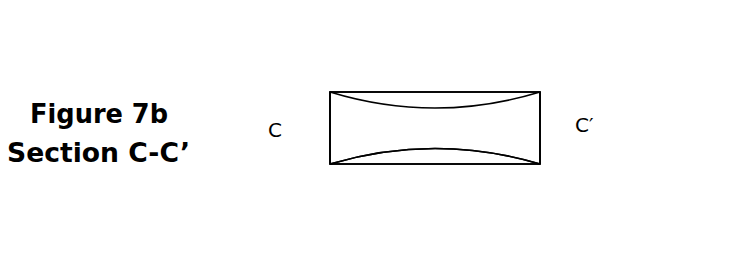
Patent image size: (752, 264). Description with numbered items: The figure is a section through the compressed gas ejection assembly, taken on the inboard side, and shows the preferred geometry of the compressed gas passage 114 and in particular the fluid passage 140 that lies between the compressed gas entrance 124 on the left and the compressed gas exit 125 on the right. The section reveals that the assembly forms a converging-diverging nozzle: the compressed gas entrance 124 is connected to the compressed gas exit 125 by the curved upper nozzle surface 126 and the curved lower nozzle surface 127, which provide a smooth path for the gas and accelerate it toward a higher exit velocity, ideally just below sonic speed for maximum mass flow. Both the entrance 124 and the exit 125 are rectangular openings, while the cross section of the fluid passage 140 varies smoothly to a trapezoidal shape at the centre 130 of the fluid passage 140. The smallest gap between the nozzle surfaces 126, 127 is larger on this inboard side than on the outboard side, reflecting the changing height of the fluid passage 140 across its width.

The compressed gas passage 114 is at (473, 125).
The fluid passage 140 is at (435, 128).
The upper nozzle surface 126 is at (383, 100).
The lower nozzle surface 127 is at (492, 150).
The centre of the fluid passage 130 is at (433, 130).
The compressed gas entrance 124 is at (330, 152).
The compressed gas exit 125 is at (540, 150).